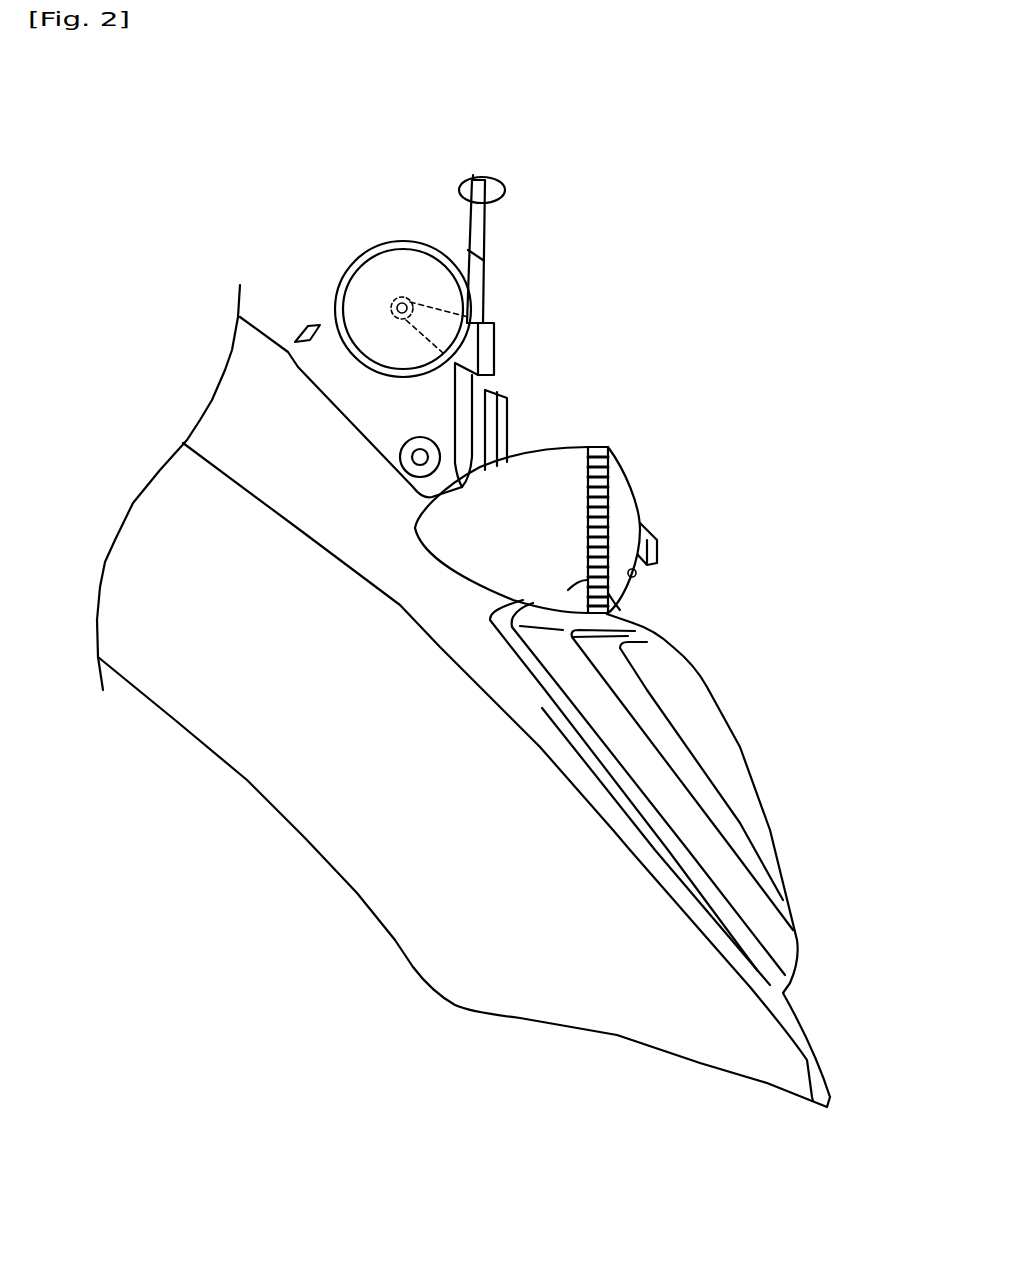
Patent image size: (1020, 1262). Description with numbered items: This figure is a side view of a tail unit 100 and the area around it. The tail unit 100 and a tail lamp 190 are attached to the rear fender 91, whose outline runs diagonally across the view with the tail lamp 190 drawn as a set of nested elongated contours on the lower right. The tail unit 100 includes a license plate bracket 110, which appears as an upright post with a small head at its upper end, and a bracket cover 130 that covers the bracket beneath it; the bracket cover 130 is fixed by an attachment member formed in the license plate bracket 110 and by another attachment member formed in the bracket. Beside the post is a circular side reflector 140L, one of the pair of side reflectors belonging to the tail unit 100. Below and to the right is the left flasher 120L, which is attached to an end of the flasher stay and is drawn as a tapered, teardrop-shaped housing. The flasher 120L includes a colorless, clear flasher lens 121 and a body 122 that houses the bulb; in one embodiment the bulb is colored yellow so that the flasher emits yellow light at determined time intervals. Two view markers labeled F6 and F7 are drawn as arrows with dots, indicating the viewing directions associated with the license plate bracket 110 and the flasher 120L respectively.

The tail unit 100 is at (688, 317).
The license plate bracket 110 is at (490, 222).
The flasher 120L is at (555, 502).
The flasher lens 121 is at (623, 497).
The body 122 is at (610, 593).
The bracket cover 130 is at (328, 327).
The side reflector 140L is at (398, 242).
The tail lamp 190 is at (720, 728).
The rear fender 91 is at (260, 762).
The view direction arrow F6 is at (463, 221).
The view direction arrow F7 is at (562, 410).